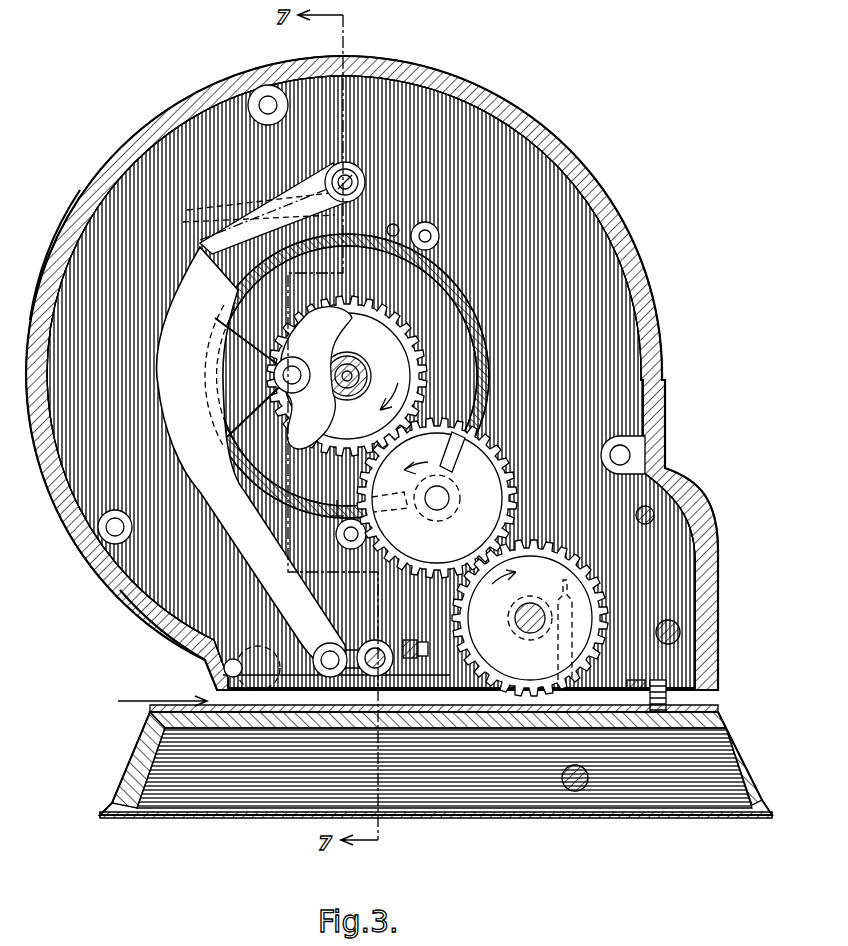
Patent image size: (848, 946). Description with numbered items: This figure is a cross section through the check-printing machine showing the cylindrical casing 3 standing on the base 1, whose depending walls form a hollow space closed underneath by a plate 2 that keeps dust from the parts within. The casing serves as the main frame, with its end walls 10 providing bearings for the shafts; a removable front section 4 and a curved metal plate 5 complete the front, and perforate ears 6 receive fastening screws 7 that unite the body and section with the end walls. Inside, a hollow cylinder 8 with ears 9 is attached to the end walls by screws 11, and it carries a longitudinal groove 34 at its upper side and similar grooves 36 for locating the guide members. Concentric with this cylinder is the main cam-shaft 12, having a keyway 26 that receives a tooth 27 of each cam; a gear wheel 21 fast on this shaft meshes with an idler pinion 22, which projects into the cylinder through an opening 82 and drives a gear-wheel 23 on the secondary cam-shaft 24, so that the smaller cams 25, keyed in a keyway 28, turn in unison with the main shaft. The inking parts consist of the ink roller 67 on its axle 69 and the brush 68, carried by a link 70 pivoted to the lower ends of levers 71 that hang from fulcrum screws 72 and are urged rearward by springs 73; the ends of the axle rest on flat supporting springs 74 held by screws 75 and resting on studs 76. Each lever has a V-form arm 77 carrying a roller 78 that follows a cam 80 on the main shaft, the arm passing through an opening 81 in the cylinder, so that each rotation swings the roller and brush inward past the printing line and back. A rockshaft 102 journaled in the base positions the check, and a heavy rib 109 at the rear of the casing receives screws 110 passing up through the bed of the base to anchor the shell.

The base 1 is at (122, 752).
The plate 2 is at (215, 820).
The casing 3 is at (640, 262).
The front section 4 is at (78, 214).
The curved metal plate 5 is at (143, 625).
The perforate ears 6 is at (262, 85).
The fastening screws 7 is at (272, 96).
The hollow cylinder 8 is at (482, 352).
The ears 9 is at (437, 231).
The end walls 10 is at (500, 247).
The screws 11 is at (430, 222).
The main cam-shaft 12 is at (362, 368).
The gear wheel 21 is at (362, 333).
The idler pinion 22 is at (450, 490).
The gear-wheel 23 is at (530, 618).
The secondary cam-shaft 24 is at (516, 618).
The cams 25 is at (535, 628).
The keyway 26 is at (333, 362).
The tooth 27 is at (354, 365).
The keyway 28 is at (510, 628).
The longitudinal groove 34 is at (389, 219).
The grooves 36 is at (333, 495).
The ink roller 67 is at (406, 640).
The brush 68 is at (422, 641).
The axle 69 is at (380, 676).
The link 70 is at (336, 670).
The levers 71 is at (250, 457).
The fulcrum screws 72 is at (366, 176).
The springs 73 is at (370, 192).
The flat supporting springs 74 is at (262, 658).
The screws 75 is at (222, 672).
The studs 76 is at (470, 688).
The arm 77 is at (340, 358).
The roller 78 is at (283, 386).
The cam 80 is at (318, 414).
The openings 81 is at (212, 322).
The openings 82 is at (486, 420).
The rockshaft 102 is at (576, 792).
The rib 109 is at (715, 678).
The screws 110 is at (700, 698).